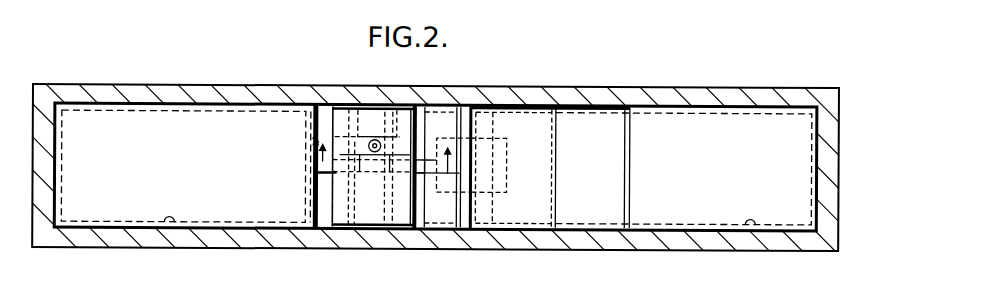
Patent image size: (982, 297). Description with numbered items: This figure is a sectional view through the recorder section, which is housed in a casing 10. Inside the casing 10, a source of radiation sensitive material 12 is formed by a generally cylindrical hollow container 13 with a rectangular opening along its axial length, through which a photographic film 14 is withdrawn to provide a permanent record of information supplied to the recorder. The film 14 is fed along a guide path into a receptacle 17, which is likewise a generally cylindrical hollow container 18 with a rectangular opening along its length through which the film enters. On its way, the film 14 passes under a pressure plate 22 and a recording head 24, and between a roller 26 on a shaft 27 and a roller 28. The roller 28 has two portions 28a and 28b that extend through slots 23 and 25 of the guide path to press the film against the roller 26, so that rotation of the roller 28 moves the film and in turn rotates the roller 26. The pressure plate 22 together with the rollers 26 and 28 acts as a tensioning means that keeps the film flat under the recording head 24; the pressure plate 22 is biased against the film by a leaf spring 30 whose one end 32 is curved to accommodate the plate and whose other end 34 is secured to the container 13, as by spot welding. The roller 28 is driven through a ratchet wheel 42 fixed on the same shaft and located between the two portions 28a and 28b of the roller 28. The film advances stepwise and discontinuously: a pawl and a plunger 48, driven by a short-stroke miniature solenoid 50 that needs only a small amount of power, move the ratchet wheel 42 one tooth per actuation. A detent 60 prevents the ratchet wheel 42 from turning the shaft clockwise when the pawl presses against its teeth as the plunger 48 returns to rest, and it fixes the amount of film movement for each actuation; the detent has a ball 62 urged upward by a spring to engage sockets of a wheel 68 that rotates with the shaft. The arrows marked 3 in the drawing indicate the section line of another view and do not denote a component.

The casing 10 is at (232, 84).
The source of radiation sensitive material 12 is at (747, 120).
The cylindrical hollow container 13 is at (751, 226).
The photographic film 14 is at (418, 116).
The receptacle 17 is at (127, 119).
The cylindrical hollow container 18 is at (168, 218).
The pressure plate 22 is at (494, 126).
The slot 23 is at (388, 226).
The recording head 24 is at (448, 113).
The slot 25 is at (363, 110).
The roller 26 is at (368, 219).
The shaft 27 is at (379, 104).
The roller 28 is at (418, 213).
The roller portion 28a is at (313, 208).
The roller portion 28b is at (326, 115).
The leaf spring 30 is at (573, 124).
The curved end of leaf spring 32 is at (485, 118).
The secured end of leaf spring 34 is at (622, 115).
The ratchet wheel 42 is at (380, 172).
The plunger 48 is at (449, 167).
The solenoid 50 is at (510, 156).
The detent 60 is at (389, 128).
The ball 62 is at (313, 139).
The wheel 68 is at (313, 143).
The section line 3- 3 is at (388, 178).